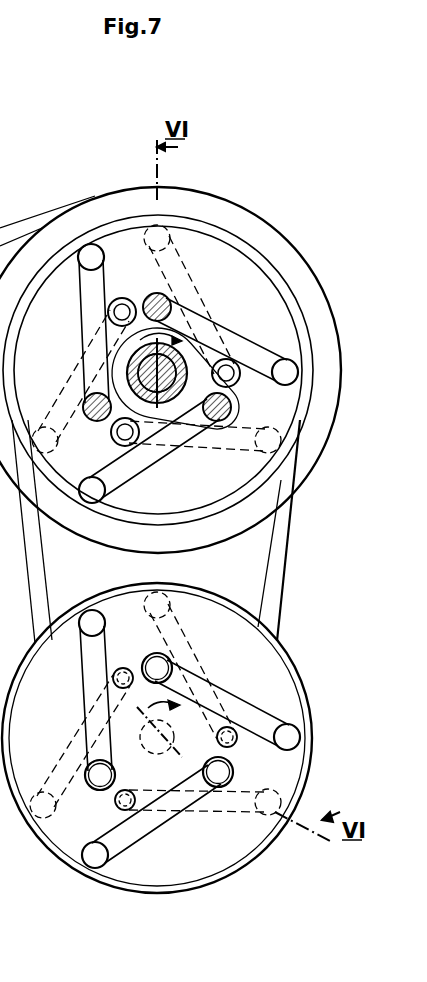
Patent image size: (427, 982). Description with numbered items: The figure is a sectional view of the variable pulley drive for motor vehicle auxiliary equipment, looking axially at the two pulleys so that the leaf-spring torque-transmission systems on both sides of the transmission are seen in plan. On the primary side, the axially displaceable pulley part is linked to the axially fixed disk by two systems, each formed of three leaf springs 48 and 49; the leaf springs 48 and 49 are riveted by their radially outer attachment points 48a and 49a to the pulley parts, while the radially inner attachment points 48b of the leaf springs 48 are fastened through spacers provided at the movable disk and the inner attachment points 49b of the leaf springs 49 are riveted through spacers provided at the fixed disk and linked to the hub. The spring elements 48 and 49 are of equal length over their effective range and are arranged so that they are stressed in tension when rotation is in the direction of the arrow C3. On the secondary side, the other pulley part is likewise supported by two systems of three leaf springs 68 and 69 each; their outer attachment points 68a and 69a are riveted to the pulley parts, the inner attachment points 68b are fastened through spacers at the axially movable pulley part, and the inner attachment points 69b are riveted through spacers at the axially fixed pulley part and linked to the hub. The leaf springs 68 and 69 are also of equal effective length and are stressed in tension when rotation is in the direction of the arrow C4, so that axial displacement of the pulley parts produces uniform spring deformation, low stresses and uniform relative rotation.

The leaf springs 48 is at (85, 664).
The attachment points of the leaf springs 48 48a is at (100, 610).
The attachment points of the leaf springs 48 48b is at (166, 655).
The leaf springs 49 is at (190, 662).
The attachment points of the leaf springs 49 49a is at (168, 598).
The attachment points of the leaf springs 49 49b is at (123, 667).
The leaf springs 68 is at (175, 258).
The attachment points of the leaf springs 68 68a is at (165, 226).
The attachment points of the leaf springs 68 68b is at (122, 297).
The leaf springs 69 is at (90, 308).
The attachment points of the leaf springs 69 69a is at (96, 243).
The attachment points of the leaf springs 69 69b is at (164, 296).
The arrow C3 is at (168, 728).
The arrow C4 is at (170, 370).